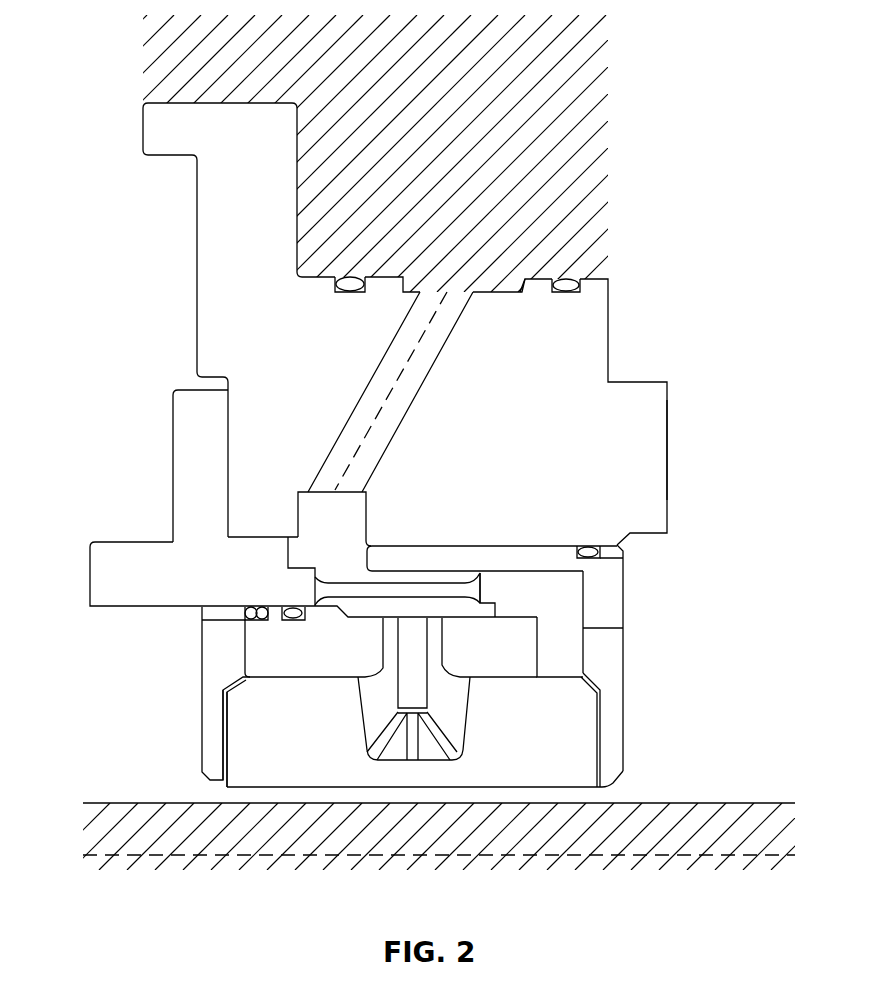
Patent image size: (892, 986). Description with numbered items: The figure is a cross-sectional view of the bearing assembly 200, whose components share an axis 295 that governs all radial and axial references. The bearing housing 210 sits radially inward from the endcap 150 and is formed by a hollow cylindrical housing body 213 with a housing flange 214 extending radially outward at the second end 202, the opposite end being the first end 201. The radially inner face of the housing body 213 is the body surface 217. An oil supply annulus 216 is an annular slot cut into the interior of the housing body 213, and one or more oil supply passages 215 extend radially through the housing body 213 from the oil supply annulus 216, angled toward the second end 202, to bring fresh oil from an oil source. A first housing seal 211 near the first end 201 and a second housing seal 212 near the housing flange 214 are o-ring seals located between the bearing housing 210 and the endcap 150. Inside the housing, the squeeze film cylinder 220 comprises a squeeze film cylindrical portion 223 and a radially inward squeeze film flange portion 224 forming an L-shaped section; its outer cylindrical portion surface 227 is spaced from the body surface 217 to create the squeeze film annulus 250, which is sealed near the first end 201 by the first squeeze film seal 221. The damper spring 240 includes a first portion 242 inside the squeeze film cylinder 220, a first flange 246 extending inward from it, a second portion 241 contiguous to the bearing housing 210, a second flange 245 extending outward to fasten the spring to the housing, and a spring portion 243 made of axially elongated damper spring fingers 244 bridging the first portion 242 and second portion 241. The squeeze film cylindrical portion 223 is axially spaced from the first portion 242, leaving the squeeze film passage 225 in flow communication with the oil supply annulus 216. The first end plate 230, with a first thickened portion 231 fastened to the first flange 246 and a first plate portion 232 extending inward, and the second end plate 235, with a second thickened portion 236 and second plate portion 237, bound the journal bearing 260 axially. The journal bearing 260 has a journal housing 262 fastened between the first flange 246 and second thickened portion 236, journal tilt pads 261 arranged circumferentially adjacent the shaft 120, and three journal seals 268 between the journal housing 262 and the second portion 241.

The shaft 120 is at (128, 802).
The endcap 150 is at (570, 148).
The bearing assembly 200 is at (123, 100).
The first end 201 is at (688, 431).
The second end 202 is at (150, 303).
The bearing housing 210 is at (605, 322).
The first housing seal 211 is at (567, 287).
The second housing seal 212 is at (352, 282).
The housing body 213 is at (518, 290).
The housing flange 214 is at (200, 210).
The oil supply passages 215 is at (413, 380).
The oil supply annulus 216 is at (307, 520).
The body surface 217 is at (508, 587).
The squeeze film cylinder 220 is at (613, 555).
The first squeeze film seal 221 is at (588, 547).
The squeeze film cylindrical portion 223 is at (613, 621).
The squeeze film flange portion 224 is at (622, 620).
The squeeze film passage 225 is at (320, 548).
The cylindrical portion surface 227 is at (464, 536).
The first end plate 230 is at (634, 722).
The first thickened portion 231 is at (603, 673).
The first plate portion 232 is at (615, 757).
The second end plate 235 is at (188, 668).
The second thickened portion 236 is at (210, 642).
The second plate portion 237 is at (210, 737).
The damper spring 240 is at (150, 520).
The second portion 241 is at (100, 577).
The first portion 242 is at (510, 593).
The spring portion 243 is at (385, 560).
The damper spring fingers 244 is at (415, 590).
The second flange 245 is at (183, 417).
The first flange 246 is at (567, 638).
The squeeze film annulus 250 is at (487, 556).
The journal bearing 260 is at (290, 812).
The journal tilt pads 261 is at (243, 722).
The journal housing 262 is at (492, 672).
The journal seals 268 is at (297, 620).
The axis 295 is at (120, 855).